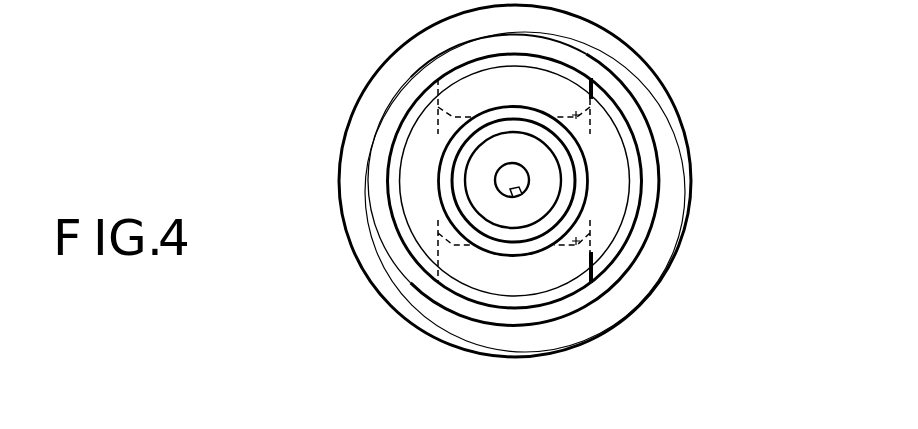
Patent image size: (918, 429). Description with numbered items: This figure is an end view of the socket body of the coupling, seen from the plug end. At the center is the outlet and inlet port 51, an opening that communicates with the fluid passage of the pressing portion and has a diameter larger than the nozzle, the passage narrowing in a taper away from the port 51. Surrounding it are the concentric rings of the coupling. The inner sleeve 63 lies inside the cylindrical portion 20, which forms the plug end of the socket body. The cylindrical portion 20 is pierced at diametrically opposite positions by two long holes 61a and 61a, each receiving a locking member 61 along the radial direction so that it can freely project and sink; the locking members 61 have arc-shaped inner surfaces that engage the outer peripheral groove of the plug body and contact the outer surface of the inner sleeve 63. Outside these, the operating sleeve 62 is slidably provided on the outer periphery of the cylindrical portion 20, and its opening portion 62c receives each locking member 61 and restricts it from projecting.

The cylindrical portion 20 is at (605, 167).
The outlet and inlet port 51 is at (509, 196).
The locking member 61 is at (447, 80).
The long hole 61a is at (597, 84).
The operating sleeve 62 is at (662, 230).
The opening portion 62c is at (388, 192).
The inner sleeve 63 is at (447, 153).